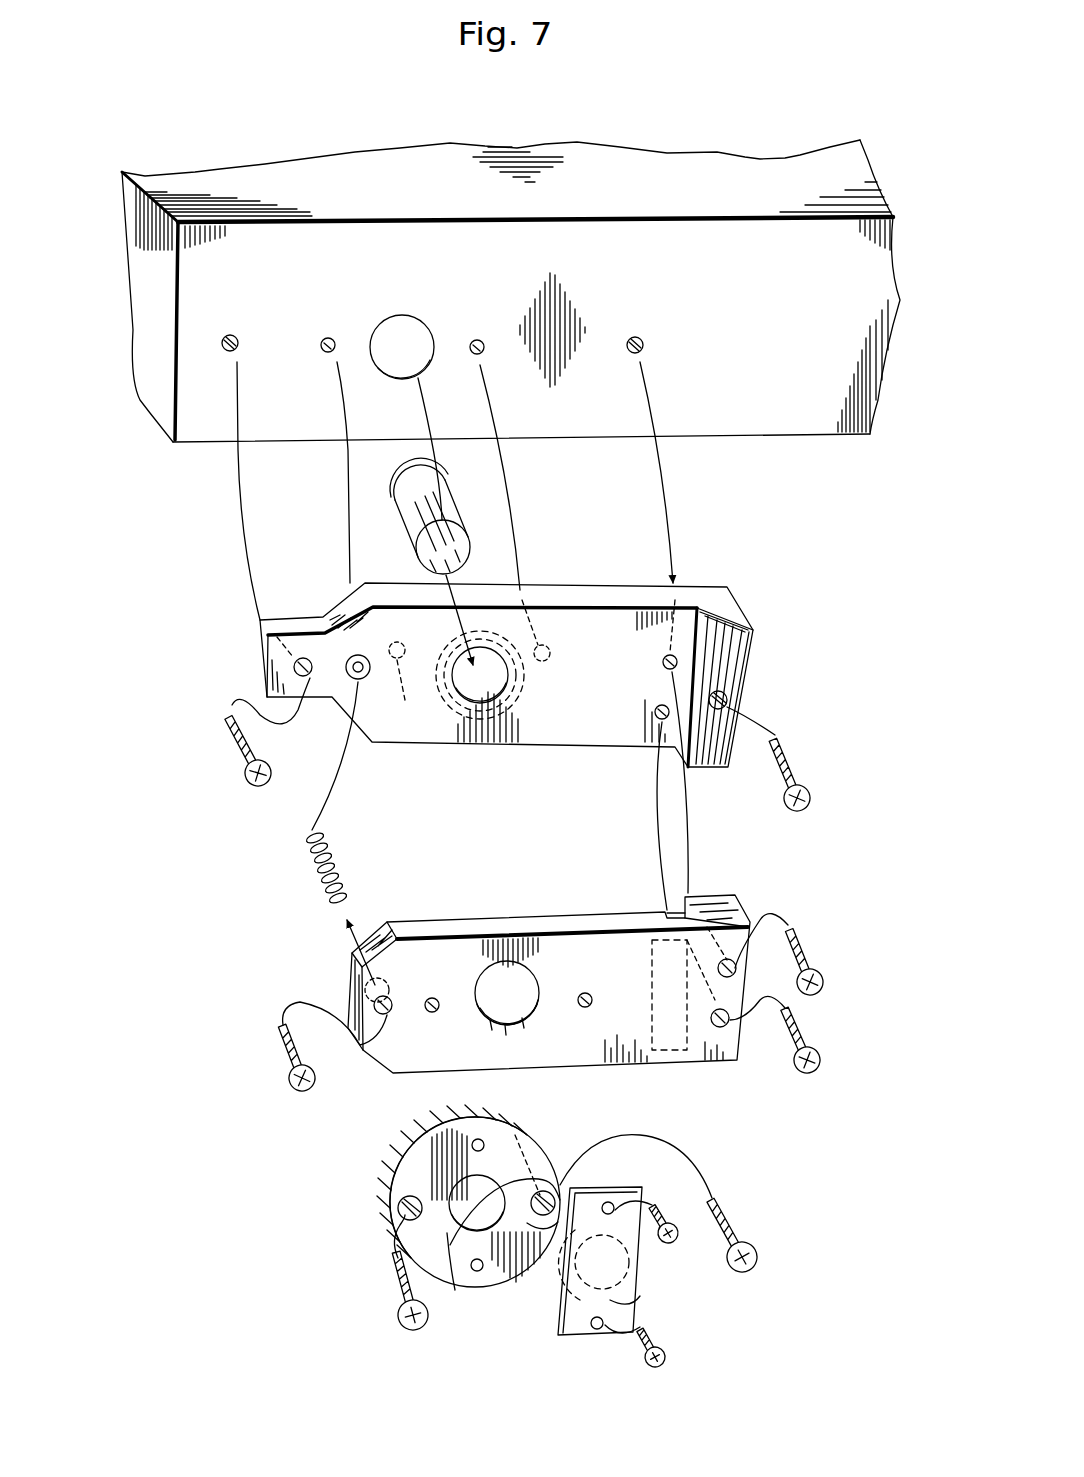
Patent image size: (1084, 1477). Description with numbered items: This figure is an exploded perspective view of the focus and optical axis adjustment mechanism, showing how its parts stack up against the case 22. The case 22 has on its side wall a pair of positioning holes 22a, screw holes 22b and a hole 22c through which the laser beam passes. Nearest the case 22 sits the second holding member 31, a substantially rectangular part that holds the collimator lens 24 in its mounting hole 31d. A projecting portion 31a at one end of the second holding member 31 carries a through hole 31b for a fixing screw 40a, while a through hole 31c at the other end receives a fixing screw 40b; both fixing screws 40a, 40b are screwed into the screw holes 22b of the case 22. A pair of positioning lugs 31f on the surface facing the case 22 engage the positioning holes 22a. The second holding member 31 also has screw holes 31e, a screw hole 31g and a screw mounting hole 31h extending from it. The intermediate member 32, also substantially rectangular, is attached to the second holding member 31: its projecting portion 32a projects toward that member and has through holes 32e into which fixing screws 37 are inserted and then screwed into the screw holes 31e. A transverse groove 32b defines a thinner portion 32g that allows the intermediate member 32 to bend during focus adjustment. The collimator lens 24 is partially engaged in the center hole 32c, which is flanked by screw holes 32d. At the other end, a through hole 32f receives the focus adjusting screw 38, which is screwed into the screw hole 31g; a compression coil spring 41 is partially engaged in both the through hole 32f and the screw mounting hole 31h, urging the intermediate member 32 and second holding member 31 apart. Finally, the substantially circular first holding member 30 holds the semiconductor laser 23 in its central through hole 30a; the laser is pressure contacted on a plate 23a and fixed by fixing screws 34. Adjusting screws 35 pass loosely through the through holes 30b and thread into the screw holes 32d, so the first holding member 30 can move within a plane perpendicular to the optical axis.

The case 22 is at (785, 170).
The positioning holes 22a is at (331, 338).
The screw holes 22b is at (233, 336).
The hole 22c is at (422, 337).
The collimator lens 24 is at (458, 520).
The second holding member 31 is at (612, 580).
The projecting portion 31a is at (742, 612).
The through hole 31b is at (727, 700).
The through hole 31c is at (295, 667).
The mounting hole 31d is at (505, 697).
The screw holes 31e is at (663, 668).
The positioning lugs 31f is at (368, 688).
The screw hole 31g is at (318, 618).
The screw mounting hole 31h is at (352, 680).
The fixing screw 40a is at (785, 770).
The fixing screw 40b is at (237, 752).
The coil spring 41 is at (313, 880).
The intermediate member 32 is at (558, 915).
The projecting portion 32a is at (720, 897).
The groove 32b is at (663, 910).
The center hole 32c is at (505, 1025).
The screw holes 32d is at (582, 995).
The through holes 32e is at (735, 960).
The through hole 32f is at (378, 1000).
The portion 32g is at (662, 1052).
The fixing screws 37 is at (802, 1032).
The focus adjusting screw 38 is at (285, 1050).
The first holding member 30 is at (382, 1197).
The through hole 30a is at (478, 1154).
The through holes 30b is at (398, 1215).
The adjusting screws 35 is at (395, 1288).
The semiconductor laser 23 is at (622, 1242).
The plate 23a is at (638, 1292).
The fixing screws 34 is at (664, 1222).